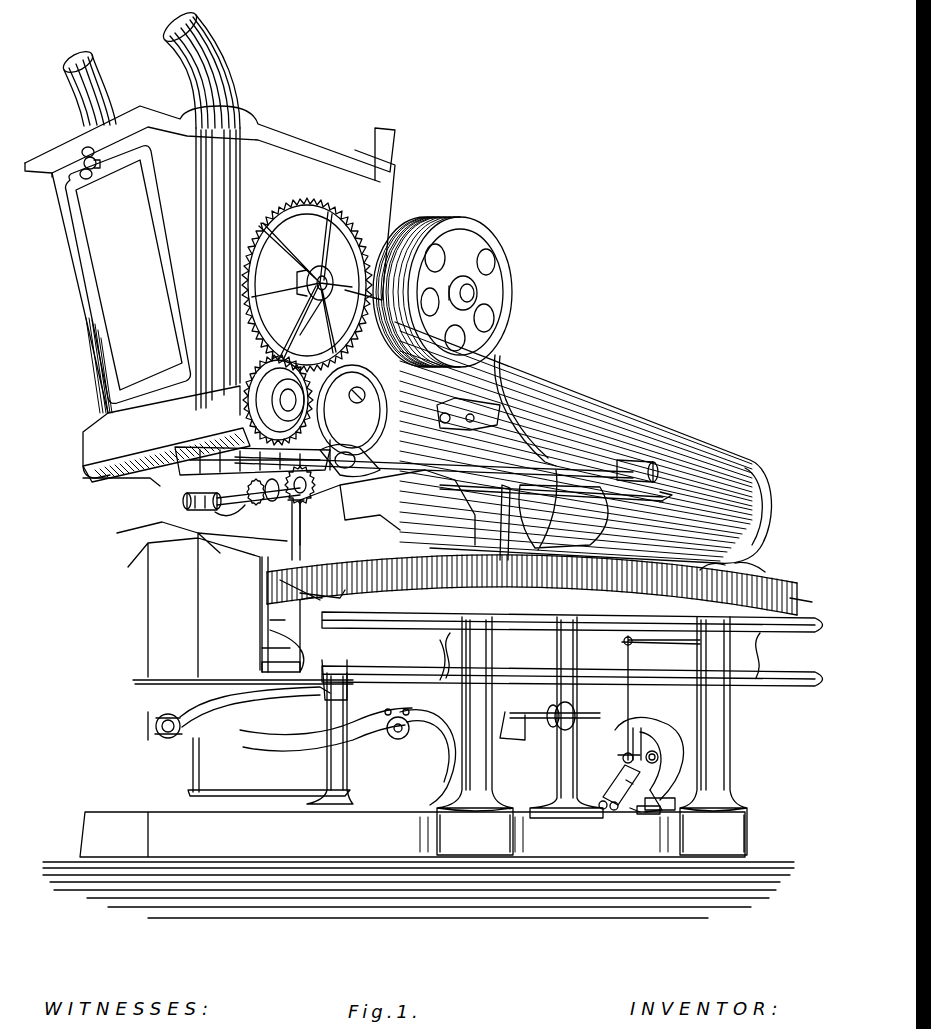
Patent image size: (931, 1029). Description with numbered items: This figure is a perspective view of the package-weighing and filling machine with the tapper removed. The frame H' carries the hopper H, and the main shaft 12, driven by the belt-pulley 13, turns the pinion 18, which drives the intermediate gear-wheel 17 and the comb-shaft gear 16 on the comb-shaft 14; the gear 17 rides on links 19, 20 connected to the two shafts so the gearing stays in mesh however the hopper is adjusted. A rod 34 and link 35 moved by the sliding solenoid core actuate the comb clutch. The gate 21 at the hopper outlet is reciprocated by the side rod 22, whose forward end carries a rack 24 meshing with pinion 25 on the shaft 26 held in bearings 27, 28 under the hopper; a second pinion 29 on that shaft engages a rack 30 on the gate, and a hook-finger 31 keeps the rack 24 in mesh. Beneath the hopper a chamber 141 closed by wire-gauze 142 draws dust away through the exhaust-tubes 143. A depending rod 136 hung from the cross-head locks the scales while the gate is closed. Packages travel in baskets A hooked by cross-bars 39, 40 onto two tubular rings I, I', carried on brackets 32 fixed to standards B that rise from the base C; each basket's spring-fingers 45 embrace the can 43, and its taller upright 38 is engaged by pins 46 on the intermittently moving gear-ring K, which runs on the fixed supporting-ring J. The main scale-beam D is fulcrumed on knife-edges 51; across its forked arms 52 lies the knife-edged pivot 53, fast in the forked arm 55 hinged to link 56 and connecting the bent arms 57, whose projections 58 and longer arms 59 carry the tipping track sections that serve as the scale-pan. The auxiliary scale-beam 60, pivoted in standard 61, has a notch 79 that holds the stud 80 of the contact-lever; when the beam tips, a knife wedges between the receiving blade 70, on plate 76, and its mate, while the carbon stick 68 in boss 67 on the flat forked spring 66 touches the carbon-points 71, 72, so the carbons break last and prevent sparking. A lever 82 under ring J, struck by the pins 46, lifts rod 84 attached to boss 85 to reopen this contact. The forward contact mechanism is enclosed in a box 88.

The exhaust-tubes 143 is at (100, 76).
The hopper H is at (210, 253).
The frame H' is at (583, 442).
The intermediate gear-wheel 17 is at (300, 195).
The pinion 18 is at (412, 232).
The belt-pulley 13 is at (484, 236).
The main shaft 12 is at (482, 282).
The link 19 is at (326, 289).
The link 20 is at (292, 318).
The comb-shaft gear 16 is at (240, 350).
The comb-shaft 14 is at (240, 375).
The hook-finger 31 is at (352, 417).
The rack 24 is at (360, 458).
The gate 21 is at (187, 437).
The rack 30 is at (147, 452).
The chamber 141 is at (100, 452).
The wire-gauze 142 is at (85, 476).
The bearing 28 is at (185, 504).
The pinion 29 is at (228, 515).
The shaft 26 is at (255, 506).
The bearing 27 is at (274, 500).
The pinion 25 is at (302, 504).
The box 88 is at (300, 528).
The side rod 22 is at (563, 460).
The rod 34 is at (512, 425).
The link 35 is at (575, 525).
The depending rod 136 is at (506, 540).
The moving gear-ring K is at (532, 585).
The fixed supporting-ring J is at (742, 566).
The pins 46 is at (348, 596).
The upright end portion 38 is at (310, 596).
The fixed ring I is at (572, 630).
The fixed ring I' is at (572, 685).
The brackets 32 is at (445, 650).
The lever 82 is at (661, 698).
The longer bent arms 59 is at (332, 650).
The standards B is at (320, 765).
The main scale-beam D is at (436, 745).
The knife-edges 51 is at (401, 733).
The forked arms 52 is at (300, 732).
The bent arms 57 is at (230, 696).
The short upward projections 58 is at (324, 700).
The knife-edged pivot 53 is at (160, 735).
The forked arm 55 is at (192, 776).
The link 56 is at (232, 800).
The carrier or basket A is at (130, 682).
The package or can 43 is at (202, 599).
The cross-bar 39 is at (272, 620).
The spring-fingers 45 is at (268, 648).
The cross-bar 40 is at (265, 668).
The notch 79 is at (618, 725).
The auxiliary scale-beam 60 is at (556, 727).
The stud 80 is at (650, 725).
The rod 84 is at (636, 725).
The standard 61 is at (660, 760).
The boss 85 is at (622, 758).
The flat forked spring 66 is at (620, 774).
The contact-blade 70 is at (660, 790).
The plate 76 is at (680, 805).
The boss 67 is at (603, 809).
The carbon stick 68 is at (614, 810).
The carbon-point 71 is at (633, 814).
The carbon-point 72 is at (648, 816).
The base C is at (745, 836).